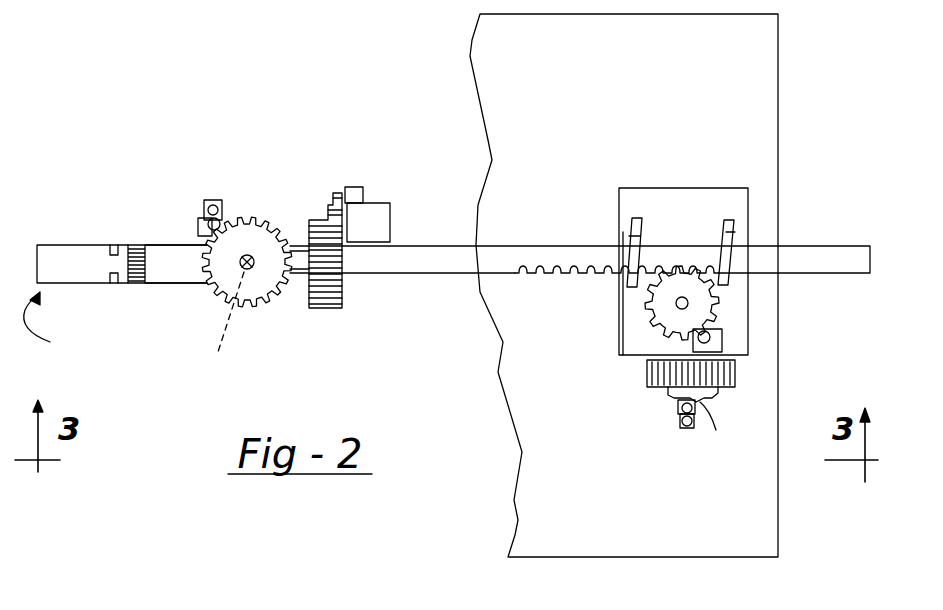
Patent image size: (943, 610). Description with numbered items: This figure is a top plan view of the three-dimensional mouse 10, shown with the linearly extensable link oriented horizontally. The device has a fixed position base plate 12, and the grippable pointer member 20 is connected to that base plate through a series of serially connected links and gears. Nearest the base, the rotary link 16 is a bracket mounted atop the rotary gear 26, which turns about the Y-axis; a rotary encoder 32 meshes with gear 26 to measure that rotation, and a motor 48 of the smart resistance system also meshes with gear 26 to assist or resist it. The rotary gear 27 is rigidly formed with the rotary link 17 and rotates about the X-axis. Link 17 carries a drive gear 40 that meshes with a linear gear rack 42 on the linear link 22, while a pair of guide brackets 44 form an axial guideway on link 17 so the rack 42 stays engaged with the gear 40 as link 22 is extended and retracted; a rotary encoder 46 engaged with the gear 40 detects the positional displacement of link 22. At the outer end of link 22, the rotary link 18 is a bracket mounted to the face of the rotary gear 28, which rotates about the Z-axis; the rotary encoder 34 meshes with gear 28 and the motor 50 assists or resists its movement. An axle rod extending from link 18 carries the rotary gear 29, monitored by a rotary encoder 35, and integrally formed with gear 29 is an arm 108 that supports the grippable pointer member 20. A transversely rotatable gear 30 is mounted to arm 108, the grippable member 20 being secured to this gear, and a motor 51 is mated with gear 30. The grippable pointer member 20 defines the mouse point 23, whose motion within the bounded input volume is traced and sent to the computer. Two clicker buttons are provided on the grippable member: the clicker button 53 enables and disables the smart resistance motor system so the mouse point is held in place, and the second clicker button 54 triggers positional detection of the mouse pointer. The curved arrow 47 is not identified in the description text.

The mouse 10 is at (268, 112).
The base plate 12 is at (528, 510).
The rotary link 16 is at (720, 394).
The rotary link 17 is at (702, 192).
The rotary link 18 is at (298, 238).
The grippable pointer member 20 is at (60, 250).
The linear link 22 is at (500, 250).
The mouse point 23 is at (219, 322).
The rotary gear 26 is at (704, 408).
The rotary gear 27 is at (655, 372).
The rotary gear 28 is at (340, 322).
The rotary gear 29 is at (260, 288).
The transversely rotatable gear 30 is at (185, 272).
The rotary encoder 32 is at (684, 430).
The rotary encoder 34 is at (356, 188).
The rotary encoder 35 is at (202, 212).
The gear 40 is at (704, 306).
The linear gear rack 42 is at (586, 280).
The guide brackets 44 is at (638, 218).
The rotary encoder 46 is at (722, 348).
The rotation arrow 47 is at (52, 318).
The motor 48 is at (680, 410).
The motor 50 is at (380, 218).
The motor 51 is at (226, 200).
The clicker button 53 is at (113, 280).
The clicker button 54 is at (113, 248).
The arm 108 is at (162, 272).